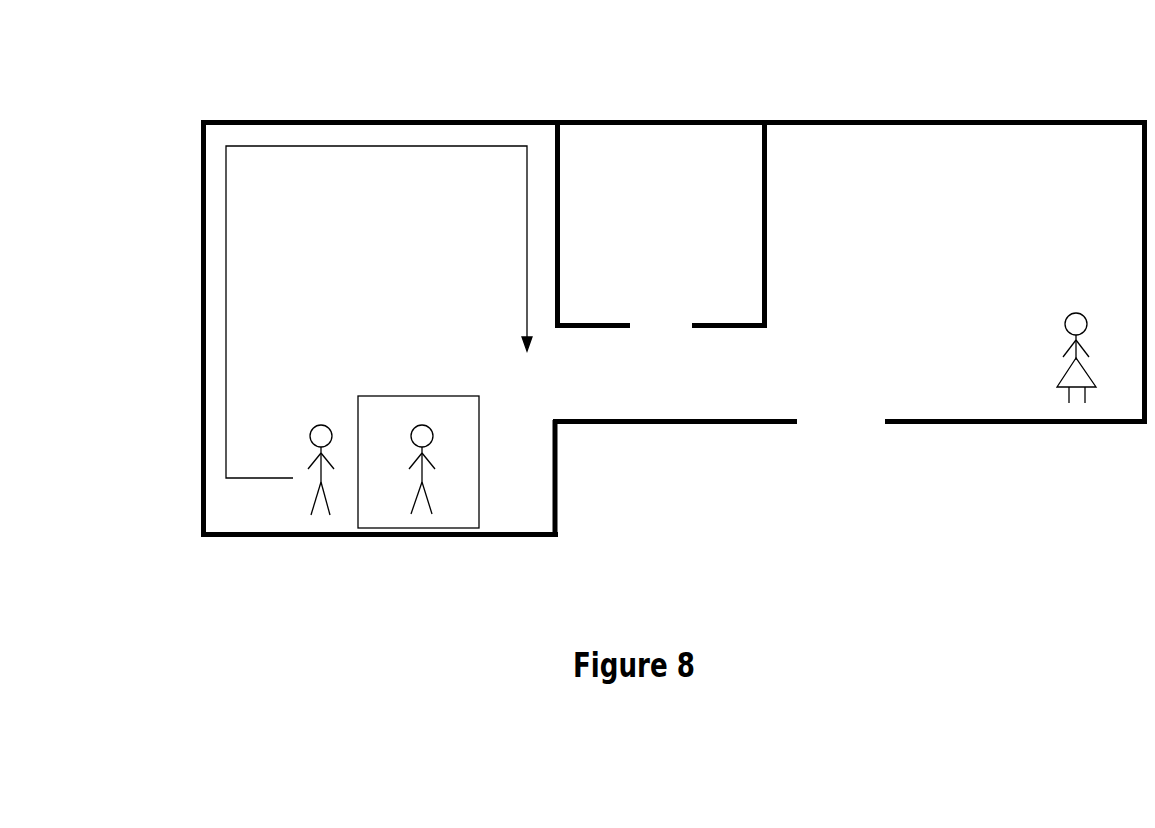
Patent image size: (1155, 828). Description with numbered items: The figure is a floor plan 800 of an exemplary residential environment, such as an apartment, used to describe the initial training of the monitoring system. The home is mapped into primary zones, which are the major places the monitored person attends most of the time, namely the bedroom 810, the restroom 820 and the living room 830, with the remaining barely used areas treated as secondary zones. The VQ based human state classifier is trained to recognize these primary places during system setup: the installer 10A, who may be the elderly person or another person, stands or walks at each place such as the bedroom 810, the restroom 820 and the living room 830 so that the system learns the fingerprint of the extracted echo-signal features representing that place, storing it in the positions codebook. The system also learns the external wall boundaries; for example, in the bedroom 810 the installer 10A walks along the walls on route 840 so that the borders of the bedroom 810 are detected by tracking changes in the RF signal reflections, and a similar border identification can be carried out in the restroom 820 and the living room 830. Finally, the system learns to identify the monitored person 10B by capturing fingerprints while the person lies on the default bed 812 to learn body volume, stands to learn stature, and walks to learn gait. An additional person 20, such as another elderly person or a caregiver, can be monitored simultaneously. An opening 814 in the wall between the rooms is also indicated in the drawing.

The floor plan 800 is at (400, 59).
The bedroom 810 is at (398, 264).
The restroom 820 is at (653, 213).
The living room 830 is at (880, 187).
The route 840 is at (442, 150).
The default bed 812 is at (458, 395).
The doorway 814 is at (840, 437).
The installer 10A is at (320, 424).
The monitored person 10B is at (412, 436).
The additional person 20 is at (1078, 313).